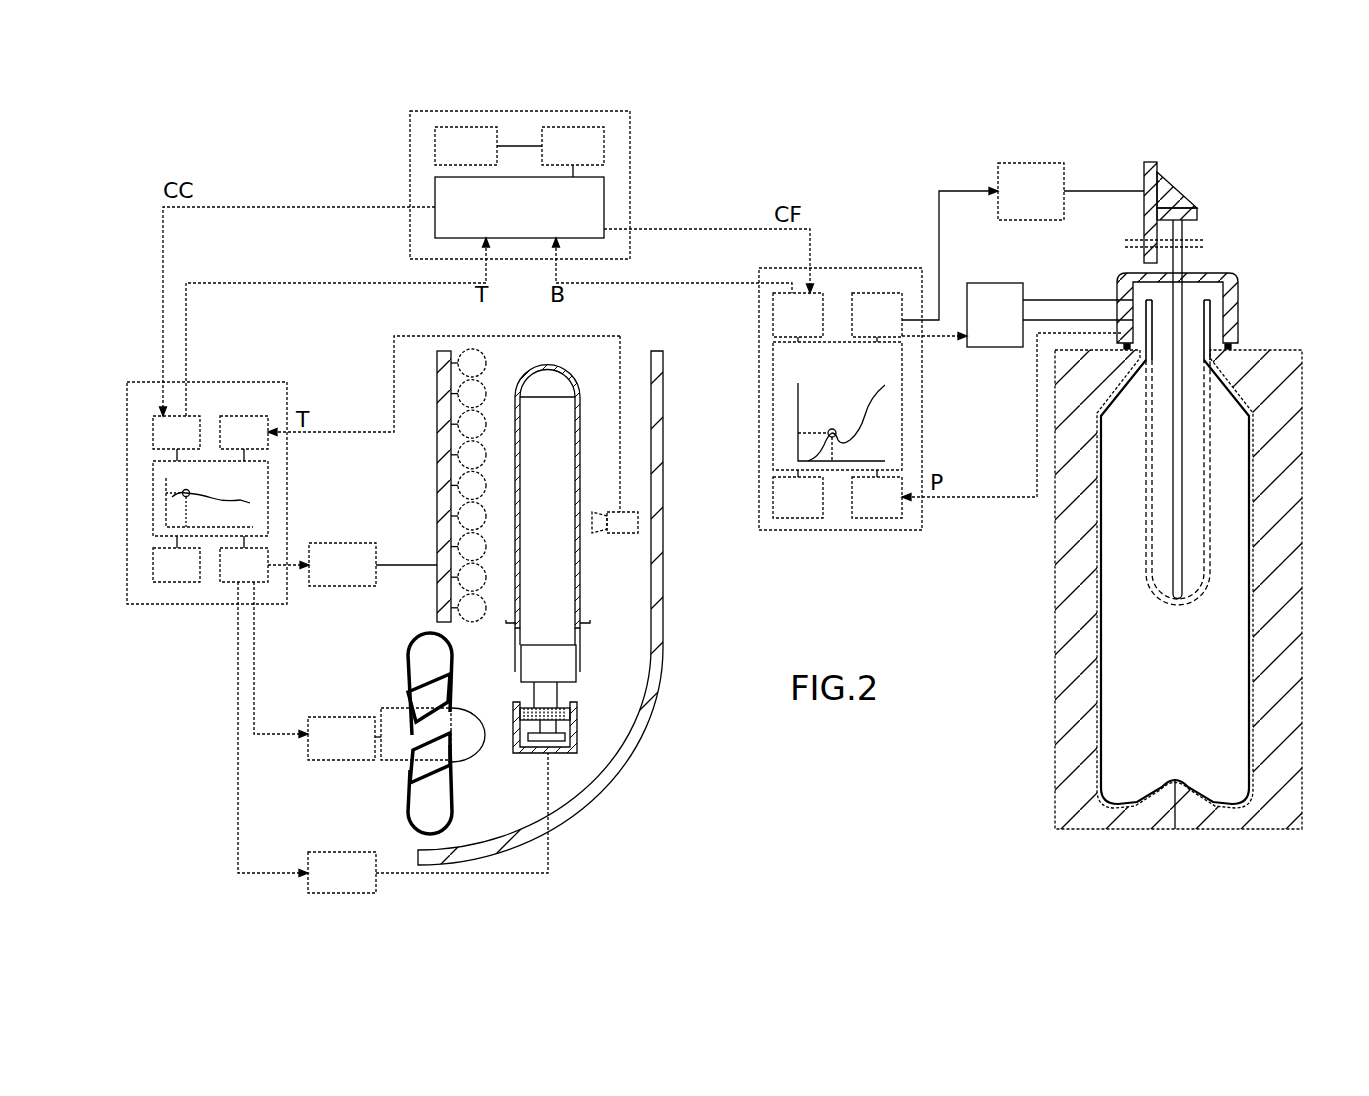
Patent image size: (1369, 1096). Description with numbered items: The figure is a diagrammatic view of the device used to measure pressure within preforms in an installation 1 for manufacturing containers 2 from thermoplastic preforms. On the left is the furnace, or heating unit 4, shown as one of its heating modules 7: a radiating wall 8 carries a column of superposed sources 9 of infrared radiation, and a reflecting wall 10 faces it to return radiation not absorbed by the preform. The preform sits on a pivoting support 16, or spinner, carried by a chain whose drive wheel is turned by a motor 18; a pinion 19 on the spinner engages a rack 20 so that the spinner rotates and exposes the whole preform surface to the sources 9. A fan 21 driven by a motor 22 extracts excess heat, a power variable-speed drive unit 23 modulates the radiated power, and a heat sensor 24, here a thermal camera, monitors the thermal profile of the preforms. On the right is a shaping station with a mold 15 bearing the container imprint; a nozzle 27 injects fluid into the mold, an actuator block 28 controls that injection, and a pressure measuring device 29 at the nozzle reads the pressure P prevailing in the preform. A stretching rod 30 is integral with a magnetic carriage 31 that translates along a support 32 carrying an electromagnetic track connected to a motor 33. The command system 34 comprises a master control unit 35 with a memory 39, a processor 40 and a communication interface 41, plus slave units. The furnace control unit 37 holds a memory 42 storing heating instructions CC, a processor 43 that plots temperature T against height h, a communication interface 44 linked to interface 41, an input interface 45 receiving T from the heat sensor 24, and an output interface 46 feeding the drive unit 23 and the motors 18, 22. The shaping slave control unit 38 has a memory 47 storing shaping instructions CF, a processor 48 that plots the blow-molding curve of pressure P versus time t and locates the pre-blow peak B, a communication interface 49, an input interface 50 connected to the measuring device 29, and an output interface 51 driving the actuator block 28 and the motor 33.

The installation 1 is at (1068, 106).
The container 2 is at (1100, 695).
The heating unit 4 is at (568, 608).
The heating module 7 is at (568, 608).
The radiating wall 8 is at (440, 475).
The sources of infrared radiation 9 is at (475, 393).
The reflecting wall 10 is at (657, 420).
The mold 15 is at (1304, 380).
The pivoting support 16 is at (557, 697).
The motor 18 is at (328, 886).
The pinion 19 is at (530, 710).
The rack 20 is at (570, 737).
The fan 21 is at (395, 710).
The motor 22 is at (327, 752).
The power variable-speed drive unit 23 is at (328, 578).
The heat sensor 24 is at (628, 522).
The nozzle 27 is at (1240, 310).
The actuator block 28 is at (981, 327).
The pressure measuring device 29 is at (1115, 347).
The stretching rod 30 is at (1185, 263).
The carriage 31 is at (1178, 200).
The support 32 is at (1144, 165).
The motor 33 is at (1017, 203).
The command system 34 is at (815, 172).
The master control unit 35 is at (605, 111).
The control unit 37 is at (257, 382).
The slave control unit 38 is at (855, 267).
The memory 39 is at (452, 159).
The processor 40 is at (559, 159).
The communication interface 41 is at (506, 219).
The memory 42 is at (165, 577).
The processor 43 is at (228, 494).
The communication interface 44 is at (165, 445).
The input interface 45 is at (232, 445).
The output interface 46 is at (232, 577).
The memory 47 is at (784, 511).
The processor 48 is at (823, 376).
The communication interface 49 is at (784, 328).
The input interface 50 is at (863, 511).
The output interface 51 is at (863, 328).